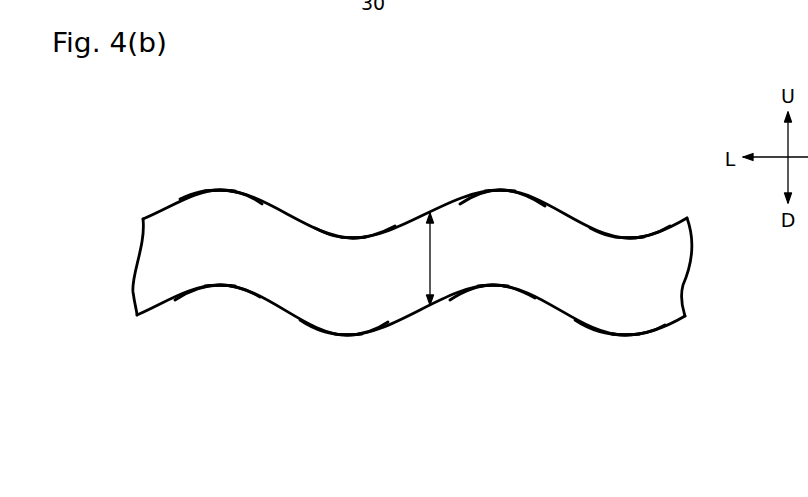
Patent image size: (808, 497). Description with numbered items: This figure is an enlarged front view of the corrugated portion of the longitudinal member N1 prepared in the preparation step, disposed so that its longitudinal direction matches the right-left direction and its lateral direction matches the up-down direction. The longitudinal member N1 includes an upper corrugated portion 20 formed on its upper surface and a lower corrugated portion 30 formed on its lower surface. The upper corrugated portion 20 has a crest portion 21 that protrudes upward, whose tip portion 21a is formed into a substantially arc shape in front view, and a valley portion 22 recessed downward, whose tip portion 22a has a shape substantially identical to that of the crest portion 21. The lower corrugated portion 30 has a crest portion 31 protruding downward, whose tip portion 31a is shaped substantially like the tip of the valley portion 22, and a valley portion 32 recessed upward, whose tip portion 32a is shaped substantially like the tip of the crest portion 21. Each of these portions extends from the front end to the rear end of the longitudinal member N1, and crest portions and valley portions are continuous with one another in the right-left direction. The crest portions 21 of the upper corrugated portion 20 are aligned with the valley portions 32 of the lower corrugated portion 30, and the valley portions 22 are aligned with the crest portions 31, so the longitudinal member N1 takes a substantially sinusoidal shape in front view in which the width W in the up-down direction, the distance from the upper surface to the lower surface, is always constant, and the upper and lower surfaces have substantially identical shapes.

The longitudinal member N1 is at (371, 191).
The upper corrugated portion 20 is at (156, 186).
The crest portion 21 is at (263, 197).
The tip portion 21a is at (222, 190).
The valley portion 22 is at (392, 228).
The tip portion 22a is at (355, 230).
The lower corrugated portion 30 is at (160, 333).
The crest portion 31 is at (310, 328).
The tip portion 31a is at (352, 335).
The valley portion 32 is at (180, 298).
The tip portion 32a is at (217, 287).
The width W is at (432, 260).